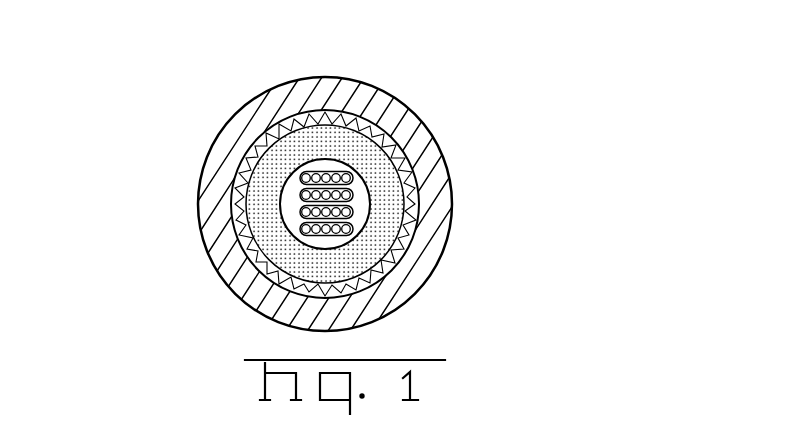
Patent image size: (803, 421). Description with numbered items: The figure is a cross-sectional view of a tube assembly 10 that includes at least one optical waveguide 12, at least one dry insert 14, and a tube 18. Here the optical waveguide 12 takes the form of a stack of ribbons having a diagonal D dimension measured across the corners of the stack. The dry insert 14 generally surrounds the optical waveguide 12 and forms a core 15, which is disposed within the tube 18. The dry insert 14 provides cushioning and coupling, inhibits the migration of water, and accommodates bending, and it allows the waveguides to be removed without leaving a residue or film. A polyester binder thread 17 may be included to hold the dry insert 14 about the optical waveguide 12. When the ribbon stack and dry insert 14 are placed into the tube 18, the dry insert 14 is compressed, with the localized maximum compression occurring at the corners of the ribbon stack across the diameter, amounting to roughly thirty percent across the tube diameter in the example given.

The tube assembly 10 is at (203, 90).
The optical waveguide 12 is at (341, 181).
The dry insert 14 is at (393, 223).
The core 15 is at (273, 248).
The polyester binder thread 17 is at (328, 112).
The tube 18 is at (217, 182).
The diagonal dimension D is at (355, 208).